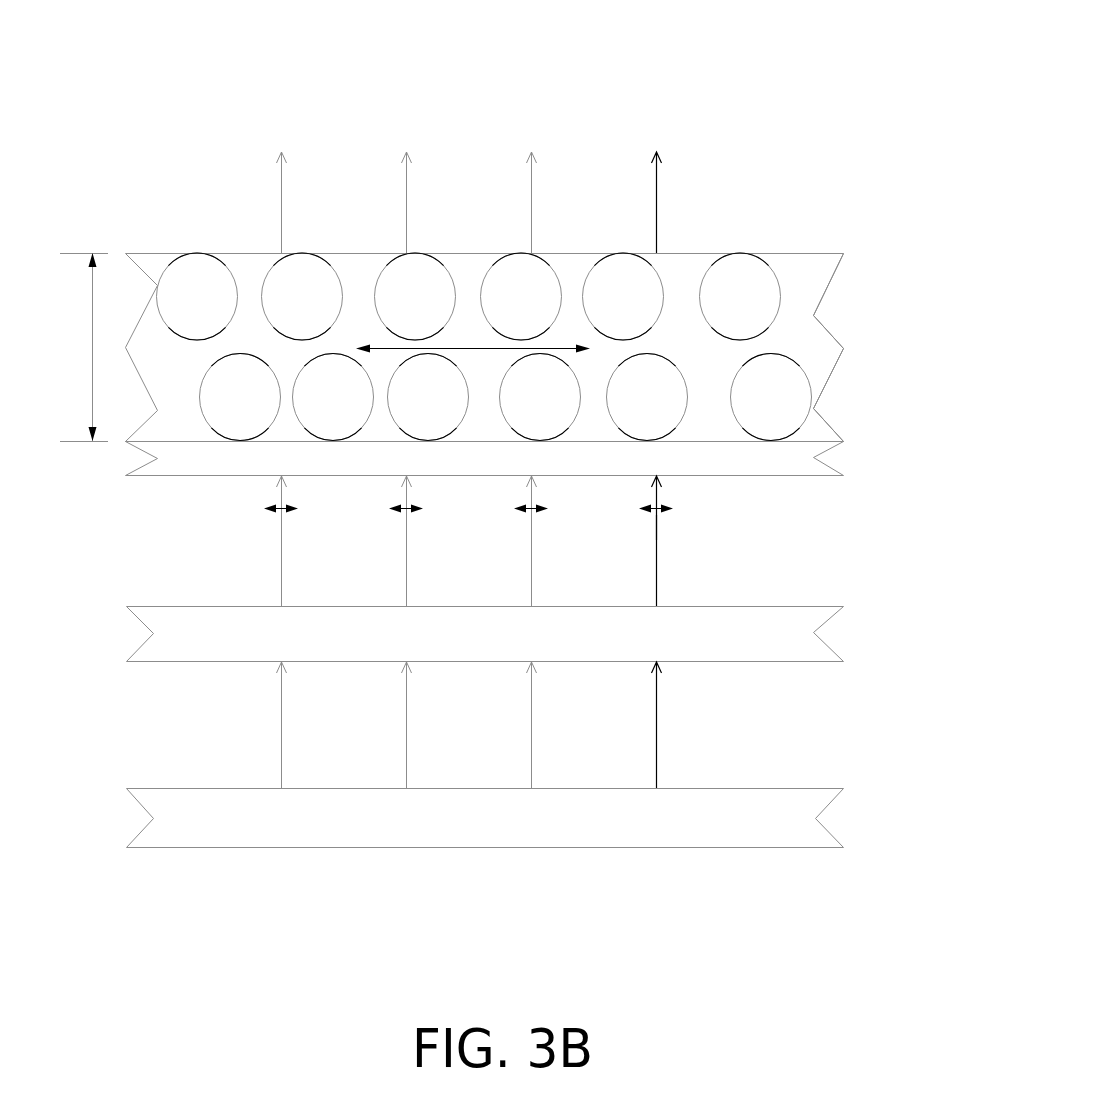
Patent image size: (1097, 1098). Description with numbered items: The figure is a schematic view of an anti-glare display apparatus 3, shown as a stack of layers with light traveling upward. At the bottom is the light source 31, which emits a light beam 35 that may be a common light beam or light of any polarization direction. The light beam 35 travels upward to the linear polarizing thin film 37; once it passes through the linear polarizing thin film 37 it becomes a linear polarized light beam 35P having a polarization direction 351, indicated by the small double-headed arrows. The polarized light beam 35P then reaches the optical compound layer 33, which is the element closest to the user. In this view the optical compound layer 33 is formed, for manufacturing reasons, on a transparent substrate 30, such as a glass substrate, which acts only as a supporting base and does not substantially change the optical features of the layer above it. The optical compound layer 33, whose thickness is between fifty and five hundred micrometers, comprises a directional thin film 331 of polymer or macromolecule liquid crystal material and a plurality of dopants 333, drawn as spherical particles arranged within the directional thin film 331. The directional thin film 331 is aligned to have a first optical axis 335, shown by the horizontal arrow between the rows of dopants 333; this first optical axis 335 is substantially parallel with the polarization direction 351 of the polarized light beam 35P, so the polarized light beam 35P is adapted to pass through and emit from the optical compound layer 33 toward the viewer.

The anti-glare display apparatus 3 is at (607, 94).
The optical compound layer 33 is at (160, 253).
The directional thin film 331 is at (805, 277).
The dopants 333 is at (738, 273).
The first optical axis 335 is at (458, 341).
The transparent substrate 30 is at (818, 468).
The light beam 35 is at (275, 215).
The polarization direction 351 is at (273, 505).
The polarized light beam 35P is at (276, 531).
The linear polarizing thin film 37 is at (806, 618).
The light source 31 is at (806, 800).